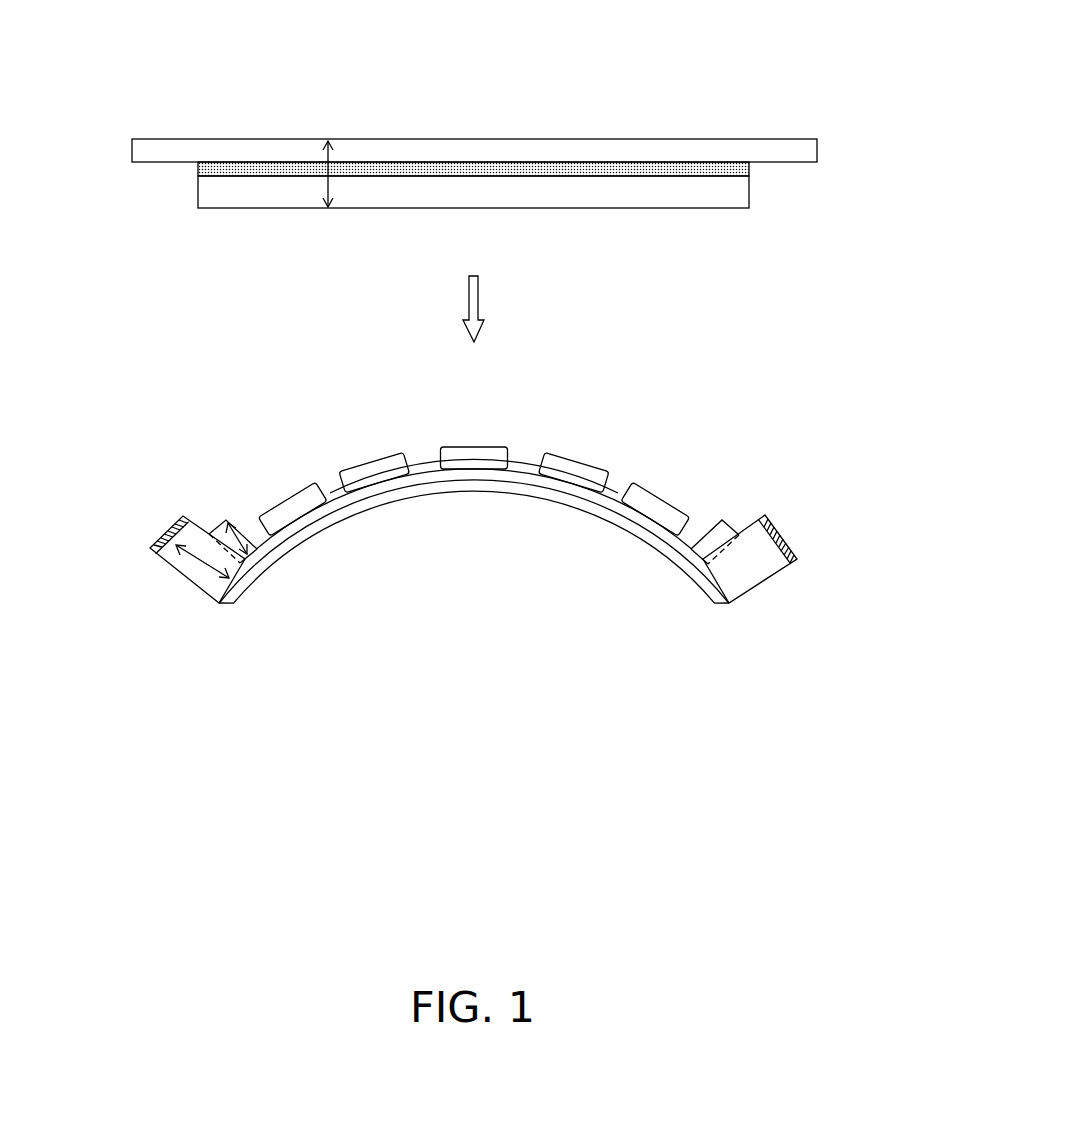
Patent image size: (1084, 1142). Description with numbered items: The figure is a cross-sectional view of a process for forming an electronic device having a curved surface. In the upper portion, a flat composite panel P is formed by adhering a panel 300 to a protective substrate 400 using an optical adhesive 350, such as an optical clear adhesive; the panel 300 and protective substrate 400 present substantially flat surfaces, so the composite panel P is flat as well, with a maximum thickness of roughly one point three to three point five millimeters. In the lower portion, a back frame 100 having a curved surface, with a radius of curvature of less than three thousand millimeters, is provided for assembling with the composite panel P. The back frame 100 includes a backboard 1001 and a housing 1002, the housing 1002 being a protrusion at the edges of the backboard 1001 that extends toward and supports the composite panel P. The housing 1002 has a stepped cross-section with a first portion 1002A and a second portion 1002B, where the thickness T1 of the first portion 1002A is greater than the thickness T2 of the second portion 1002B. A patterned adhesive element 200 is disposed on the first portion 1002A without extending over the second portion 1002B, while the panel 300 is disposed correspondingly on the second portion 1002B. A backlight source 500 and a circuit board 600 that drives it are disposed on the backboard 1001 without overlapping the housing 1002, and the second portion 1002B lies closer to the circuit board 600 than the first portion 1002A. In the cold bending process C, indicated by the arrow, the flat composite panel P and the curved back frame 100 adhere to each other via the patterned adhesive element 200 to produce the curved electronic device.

The composite panel P is at (184, 91).
The panel 300 is at (613, 188).
The optical adhesive 350 is at (473, 162).
The protective substrate 400 is at (652, 157).
The cold bending process C is at (479, 296).
The back frame 100 is at (768, 650).
The backboard 1001 is at (651, 538).
The housing 1002 is at (729, 604).
The first portion 1002A is at (150, 548).
The second portion 1002B is at (258, 557).
The patterned adhesive element 200 is at (786, 557).
The backlight source 500 is at (373, 471).
The circuit board 600 is at (427, 481).
The thickness of the first portion T1 is at (200, 563).
The thickness of the second portion T2 is at (236, 566).